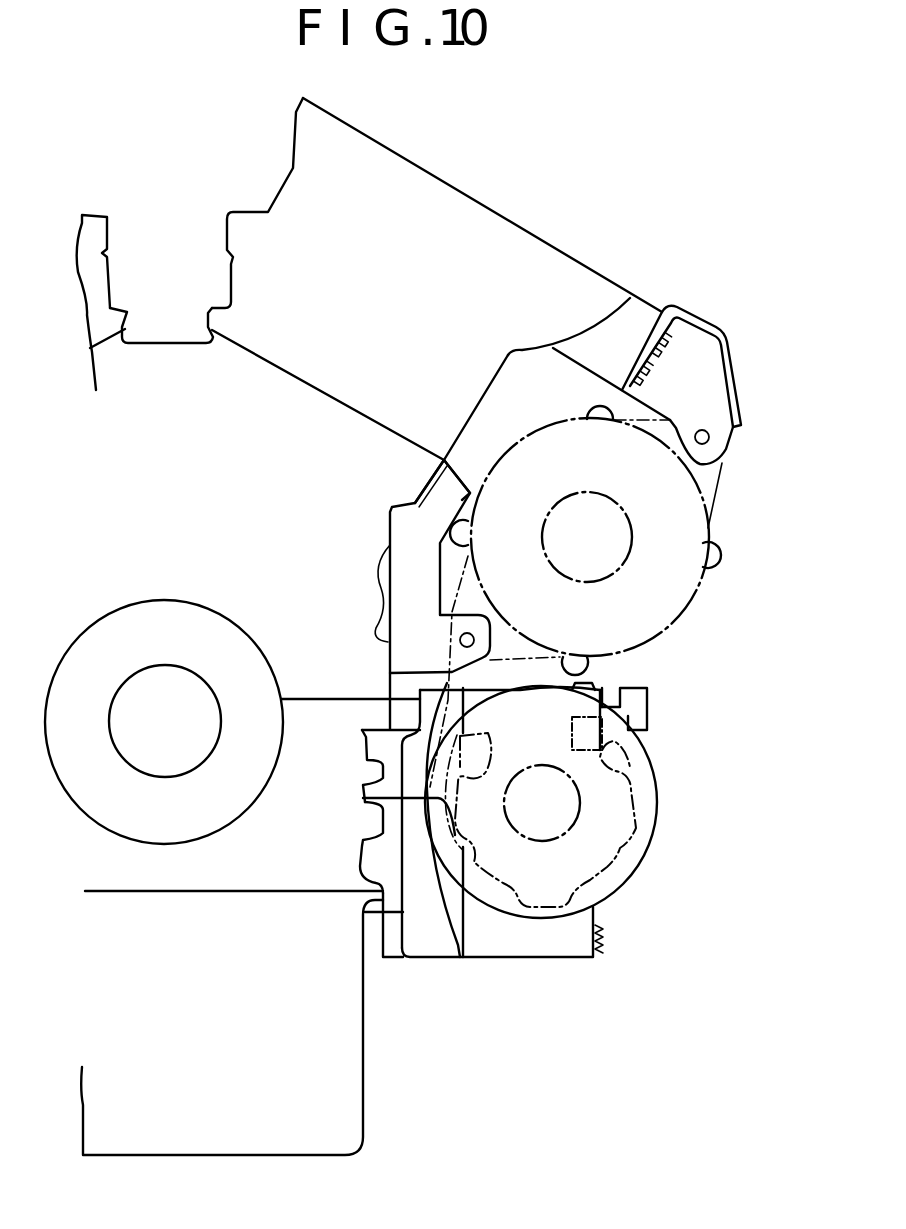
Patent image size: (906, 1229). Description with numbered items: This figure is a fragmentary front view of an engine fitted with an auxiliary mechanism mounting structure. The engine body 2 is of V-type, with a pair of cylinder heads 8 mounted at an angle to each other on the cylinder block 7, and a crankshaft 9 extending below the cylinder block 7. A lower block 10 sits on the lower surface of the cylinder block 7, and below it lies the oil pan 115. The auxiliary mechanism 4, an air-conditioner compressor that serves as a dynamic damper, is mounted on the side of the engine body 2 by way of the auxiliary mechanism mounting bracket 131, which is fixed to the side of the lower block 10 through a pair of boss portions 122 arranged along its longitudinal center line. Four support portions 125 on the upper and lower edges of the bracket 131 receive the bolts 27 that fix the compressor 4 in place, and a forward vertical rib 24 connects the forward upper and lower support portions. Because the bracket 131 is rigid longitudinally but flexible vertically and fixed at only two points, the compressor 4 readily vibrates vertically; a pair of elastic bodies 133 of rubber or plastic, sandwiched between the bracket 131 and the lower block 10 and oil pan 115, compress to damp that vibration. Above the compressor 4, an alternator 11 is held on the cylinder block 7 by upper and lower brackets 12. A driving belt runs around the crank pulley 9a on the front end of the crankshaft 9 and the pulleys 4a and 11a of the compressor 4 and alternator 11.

The engine body 2 is at (156, 306).
The auxiliary mechanism 4 is at (657, 723).
The pulley 4a is at (658, 790).
The cylinder block 7 is at (342, 418).
The cylinder heads 8 is at (95, 230).
The crankshaft 9 is at (187, 693).
The crank pulley 9a is at (243, 660).
The lower block 10 is at (230, 880).
The alternator 11 is at (703, 535).
The pulley 11a is at (603, 517).
The brackets 12 is at (690, 377).
The forward vertical rib 24 is at (380, 795).
The bolts 27 is at (607, 687).
The oil pan 115 is at (347, 1130).
The boss portions 122 is at (377, 832).
The support portions 125 is at (450, 717).
The auxiliary mechanism mounting bracket 131 is at (429, 978).
The elastic bodies 133 is at (402, 715).